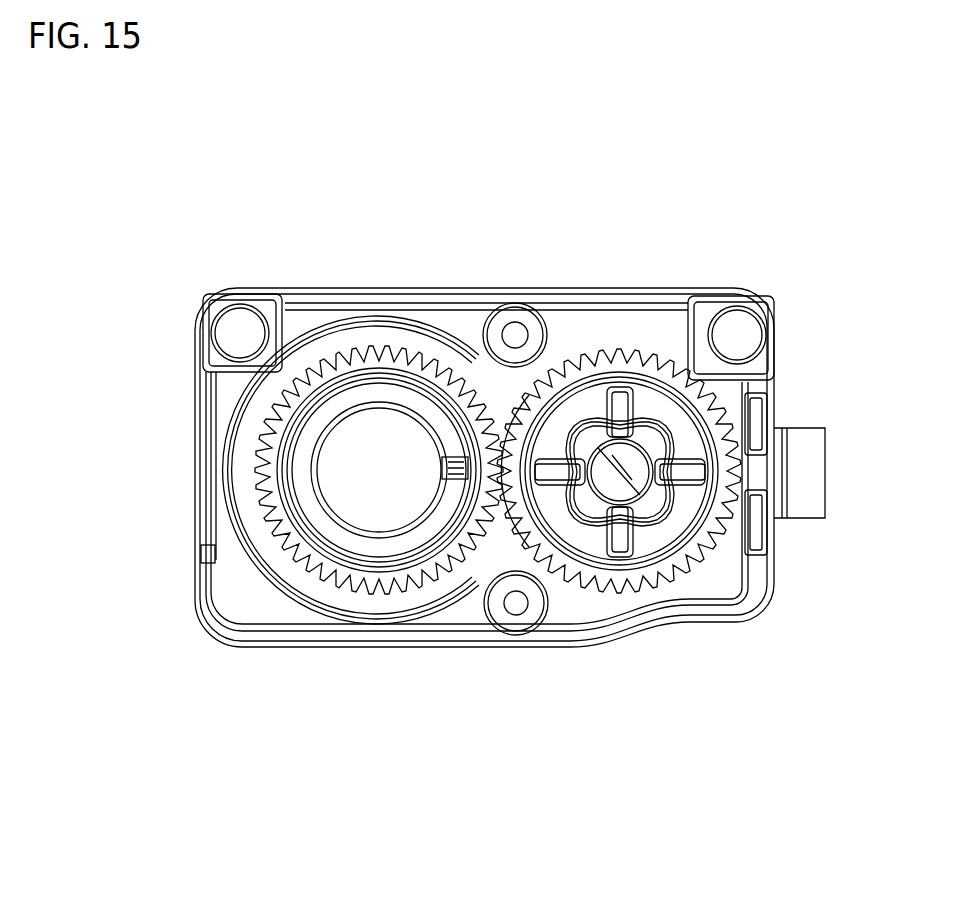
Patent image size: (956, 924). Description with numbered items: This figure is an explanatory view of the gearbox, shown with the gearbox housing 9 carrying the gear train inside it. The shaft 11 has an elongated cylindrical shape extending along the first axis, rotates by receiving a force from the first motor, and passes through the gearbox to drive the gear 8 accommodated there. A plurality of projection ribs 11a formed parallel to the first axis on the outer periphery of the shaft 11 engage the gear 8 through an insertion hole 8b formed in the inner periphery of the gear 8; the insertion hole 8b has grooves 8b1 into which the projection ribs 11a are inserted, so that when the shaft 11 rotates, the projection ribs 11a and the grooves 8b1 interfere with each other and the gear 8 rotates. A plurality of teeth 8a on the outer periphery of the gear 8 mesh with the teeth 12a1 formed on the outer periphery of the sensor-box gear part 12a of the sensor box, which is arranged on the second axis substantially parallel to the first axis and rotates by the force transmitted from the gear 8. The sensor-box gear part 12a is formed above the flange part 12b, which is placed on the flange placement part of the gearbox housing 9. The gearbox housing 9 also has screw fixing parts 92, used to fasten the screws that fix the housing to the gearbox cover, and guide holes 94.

The gear 8 is at (634, 400).
The teeth 8a is at (661, 402).
The insertion hole 8b is at (605, 392).
The grooves 8b1 is at (571, 418).
The gearbox housing 9 is at (195, 568).
The shaft 11 is at (668, 518).
The projection ribs 11a is at (615, 525).
The sensor-box gear part 12a is at (408, 600).
The teeth 12a1 is at (370, 598).
The flange part 12b is at (337, 598).
The screw fixing parts 92 is at (516, 335).
The guide holes 94 is at (247, 333).